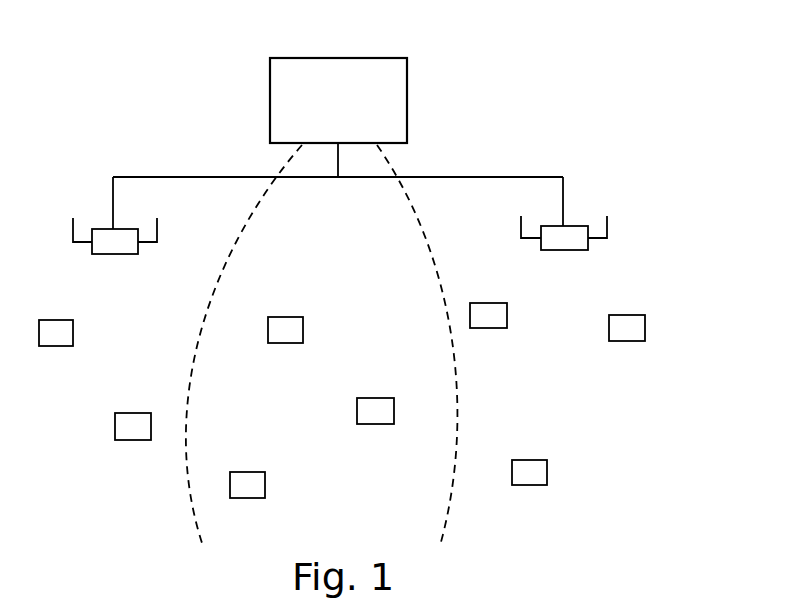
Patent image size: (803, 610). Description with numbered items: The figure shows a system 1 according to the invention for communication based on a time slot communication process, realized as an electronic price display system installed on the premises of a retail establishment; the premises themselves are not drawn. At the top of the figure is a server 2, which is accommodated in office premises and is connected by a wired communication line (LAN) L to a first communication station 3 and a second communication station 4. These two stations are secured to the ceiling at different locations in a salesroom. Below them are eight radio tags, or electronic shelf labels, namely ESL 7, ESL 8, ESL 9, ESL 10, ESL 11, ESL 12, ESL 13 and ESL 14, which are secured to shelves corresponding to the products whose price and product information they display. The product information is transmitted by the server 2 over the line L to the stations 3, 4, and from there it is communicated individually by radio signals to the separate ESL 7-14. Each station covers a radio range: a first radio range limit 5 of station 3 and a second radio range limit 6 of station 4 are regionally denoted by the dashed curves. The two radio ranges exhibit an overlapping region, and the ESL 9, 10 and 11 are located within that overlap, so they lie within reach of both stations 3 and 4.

The system 1 is at (594, 86).
The server 2 is at (408, 100).
The first communication station 3 is at (127, 242).
The second communication station 4 is at (577, 238).
The first radio range limit 5 is at (410, 200).
The second radio range limit 6 is at (260, 200).
The radio tag (electronic shelf label) 7 is at (62, 330).
The radio tag (electronic shelf label) 8 is at (138, 425).
The radio tag (electronic shelf label) 9 is at (291, 330).
The radio tag (electronic shelf label) 10 is at (252, 483).
The radio tag (electronic shelf label) 11 is at (382, 412).
The radio tag (electronic shelf label) 12 is at (494, 313).
The radio tag (electronic shelf label) 13 is at (633, 326).
The radio tag (electronic shelf label) 14 is at (535, 470).
The wired communication line (LAN) L is at (528, 176).